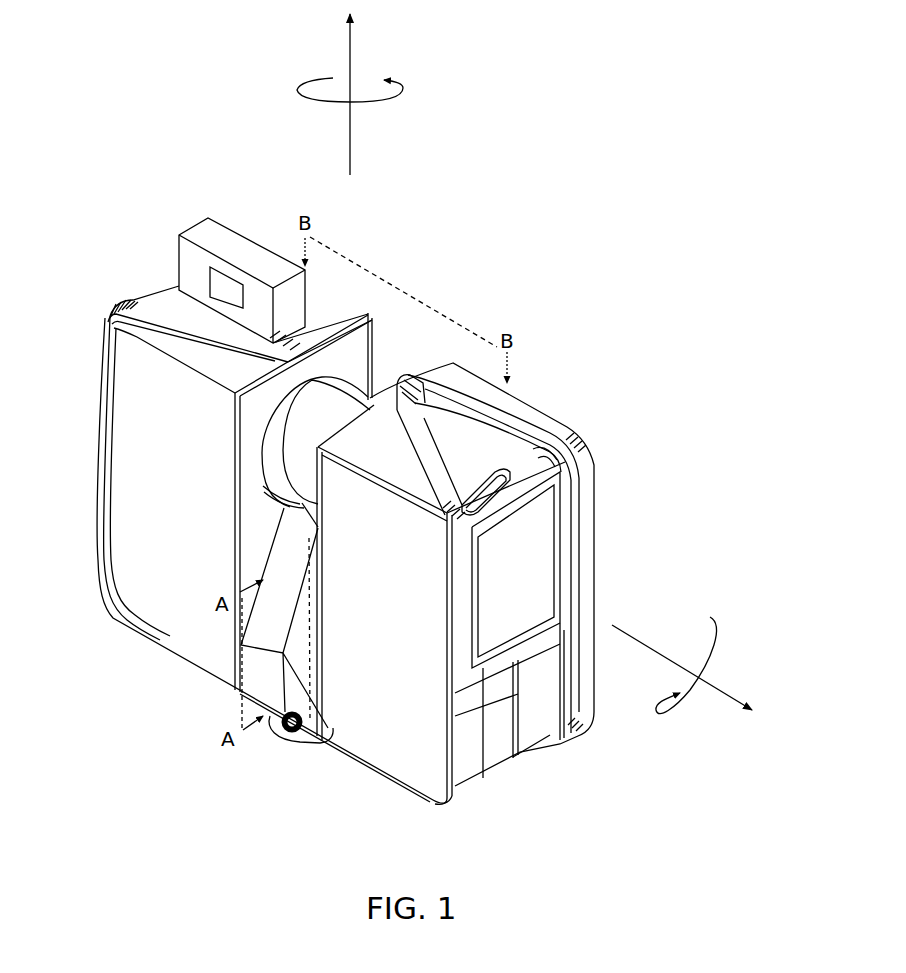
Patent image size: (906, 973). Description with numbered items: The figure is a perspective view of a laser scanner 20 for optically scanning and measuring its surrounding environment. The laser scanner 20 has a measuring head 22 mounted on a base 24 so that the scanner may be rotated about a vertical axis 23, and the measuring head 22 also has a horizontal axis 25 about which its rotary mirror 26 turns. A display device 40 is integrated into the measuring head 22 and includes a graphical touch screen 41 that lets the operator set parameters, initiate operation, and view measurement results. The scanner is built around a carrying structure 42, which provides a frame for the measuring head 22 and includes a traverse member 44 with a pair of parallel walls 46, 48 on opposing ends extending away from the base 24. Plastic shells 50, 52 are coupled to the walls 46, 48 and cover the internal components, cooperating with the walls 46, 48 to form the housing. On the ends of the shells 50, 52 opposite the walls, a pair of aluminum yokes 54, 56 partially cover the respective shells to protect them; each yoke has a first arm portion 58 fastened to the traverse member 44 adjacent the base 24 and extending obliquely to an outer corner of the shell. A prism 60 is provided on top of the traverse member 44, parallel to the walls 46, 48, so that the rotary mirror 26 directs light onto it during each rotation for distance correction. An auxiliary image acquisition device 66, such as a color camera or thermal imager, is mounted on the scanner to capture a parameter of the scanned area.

The laser scanner 20 is at (200, 102).
The measuring head 22 is at (560, 321).
The vertical axis 23 is at (355, 60).
The base 24 is at (290, 735).
The horizontal axis 25 is at (733, 680).
The rotary mirror 26 is at (338, 407).
The display device 40 is at (617, 555).
The graphical touch screen 41 is at (545, 530).
The carrying structure 42 is at (188, 754).
The traverse member 44 is at (303, 735).
The wall 46 is at (442, 370).
The wall 48 is at (372, 346).
The shell 50 is at (132, 518).
The shell 52 is at (430, 738).
The yoke 54 is at (556, 426).
The yoke 56 is at (142, 302).
The first arm portion 58 is at (120, 632).
The prism 60 is at (320, 742).
The auxiliary image acquisition device 66 is at (188, 228).